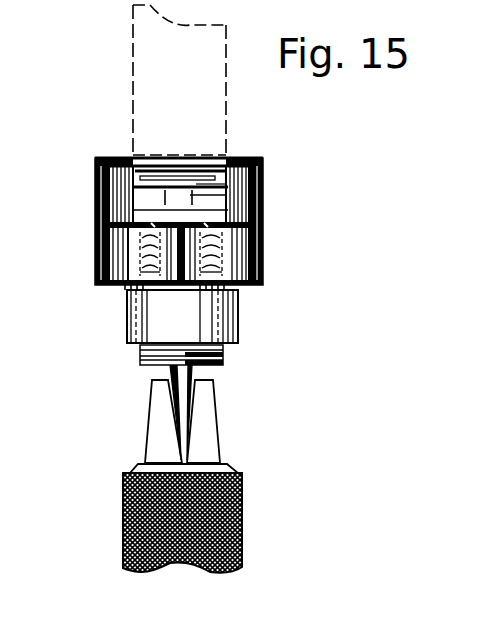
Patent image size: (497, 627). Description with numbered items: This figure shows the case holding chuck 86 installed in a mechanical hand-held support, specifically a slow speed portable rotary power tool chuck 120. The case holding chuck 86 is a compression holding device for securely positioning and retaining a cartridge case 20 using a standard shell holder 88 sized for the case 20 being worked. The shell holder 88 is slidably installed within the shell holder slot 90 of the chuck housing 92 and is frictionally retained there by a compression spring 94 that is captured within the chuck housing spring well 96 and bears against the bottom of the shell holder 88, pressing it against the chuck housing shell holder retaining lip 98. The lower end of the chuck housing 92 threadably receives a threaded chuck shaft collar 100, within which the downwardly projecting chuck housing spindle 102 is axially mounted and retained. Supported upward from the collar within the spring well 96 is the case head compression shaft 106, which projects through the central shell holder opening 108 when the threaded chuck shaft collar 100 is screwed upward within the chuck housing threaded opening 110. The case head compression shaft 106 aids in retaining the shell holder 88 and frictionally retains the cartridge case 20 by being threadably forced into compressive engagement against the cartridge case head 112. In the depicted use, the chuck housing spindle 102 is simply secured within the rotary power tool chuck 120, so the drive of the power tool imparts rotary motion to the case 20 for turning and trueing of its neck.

The cartridge case 20 is at (227, 47).
The case holding chuck 86 is at (292, 204).
The shell holder 88 is at (264, 164).
The shell holder slot 90 is at (165, 195).
The chuck housing 92 is at (264, 262).
The compression spring 94 is at (205, 241).
The chuck housing spring well 96 is at (245, 250).
The shell holder retaining lip 98 is at (238, 157).
The threaded chuck shaft collar 100 is at (223, 352).
The chuck housing spindle 102 is at (197, 373).
The case head compression shaft 106 is at (128, 205).
The central shell holder opening 108 is at (195, 198).
The chuck housing threaded opening 110 is at (238, 300).
The cartridge case head 112 is at (128, 184).
The rotary power tool chuck 120 is at (207, 436).